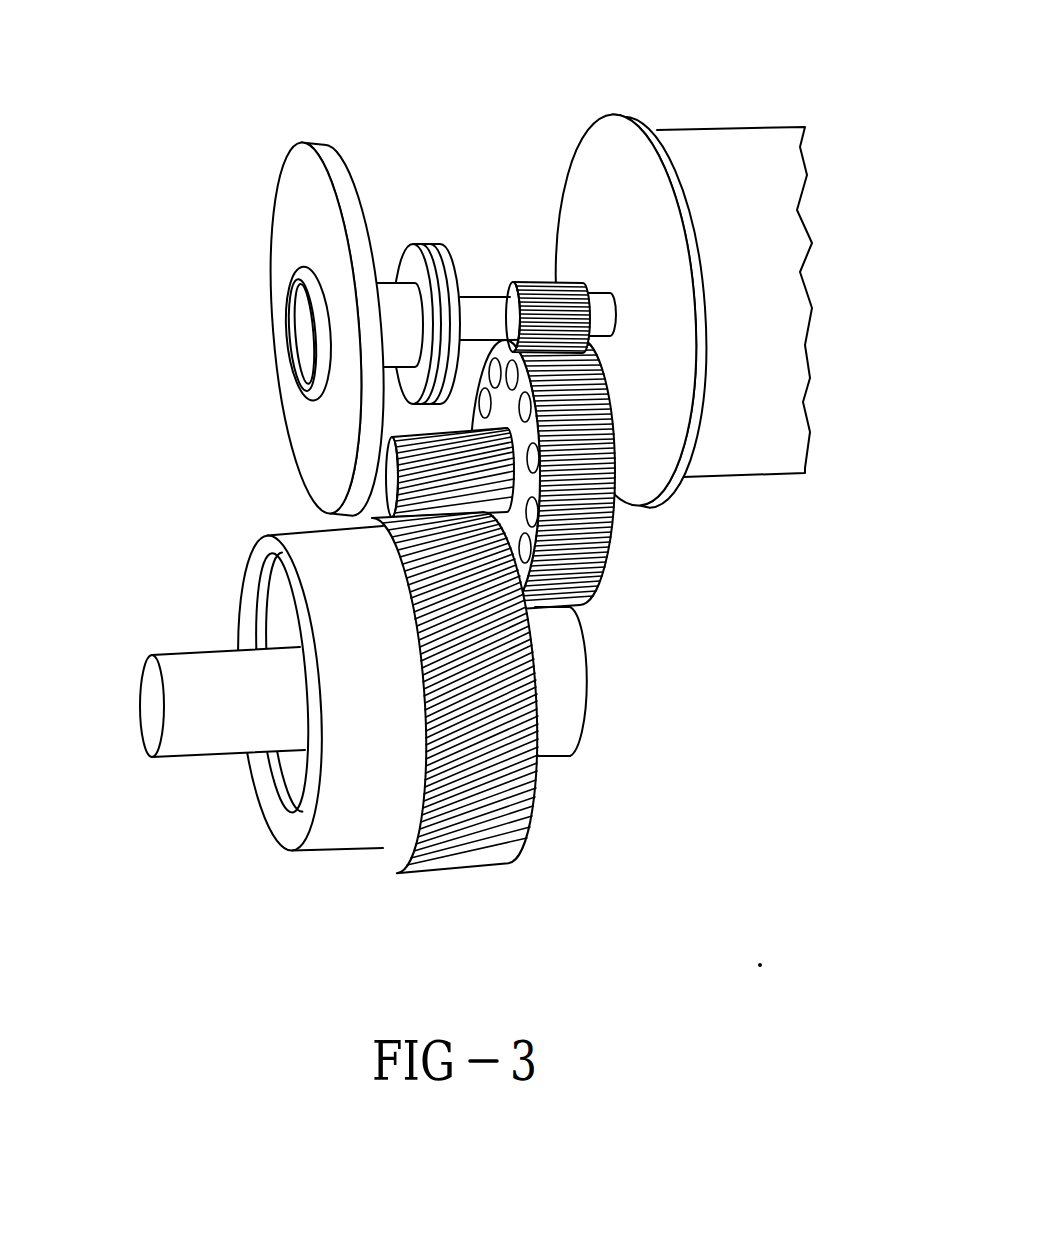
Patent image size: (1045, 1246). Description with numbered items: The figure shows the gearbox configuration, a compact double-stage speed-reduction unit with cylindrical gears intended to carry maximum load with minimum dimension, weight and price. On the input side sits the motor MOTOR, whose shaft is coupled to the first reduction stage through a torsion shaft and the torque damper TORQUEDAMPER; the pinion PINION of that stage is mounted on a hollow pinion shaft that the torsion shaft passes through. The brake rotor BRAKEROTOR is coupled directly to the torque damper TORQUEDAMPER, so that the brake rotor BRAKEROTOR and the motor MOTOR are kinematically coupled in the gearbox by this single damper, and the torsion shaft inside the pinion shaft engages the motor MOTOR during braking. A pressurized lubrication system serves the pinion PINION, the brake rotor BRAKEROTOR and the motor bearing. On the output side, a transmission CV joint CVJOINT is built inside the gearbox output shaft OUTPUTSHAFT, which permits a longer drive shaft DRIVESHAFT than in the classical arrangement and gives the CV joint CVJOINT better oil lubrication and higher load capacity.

The motor MOTOR is at (713, 150).
The pinion PINION is at (527, 290).
The torque damper TORQUEDAMPER is at (420, 247).
The brake rotor BRAKEROTOR is at (292, 225).
The output shaft OUTPUTSHAFT is at (562, 717).
The CV joint CVJOINT is at (347, 820).
The drive shaft DRIVESHAFT is at (202, 662).